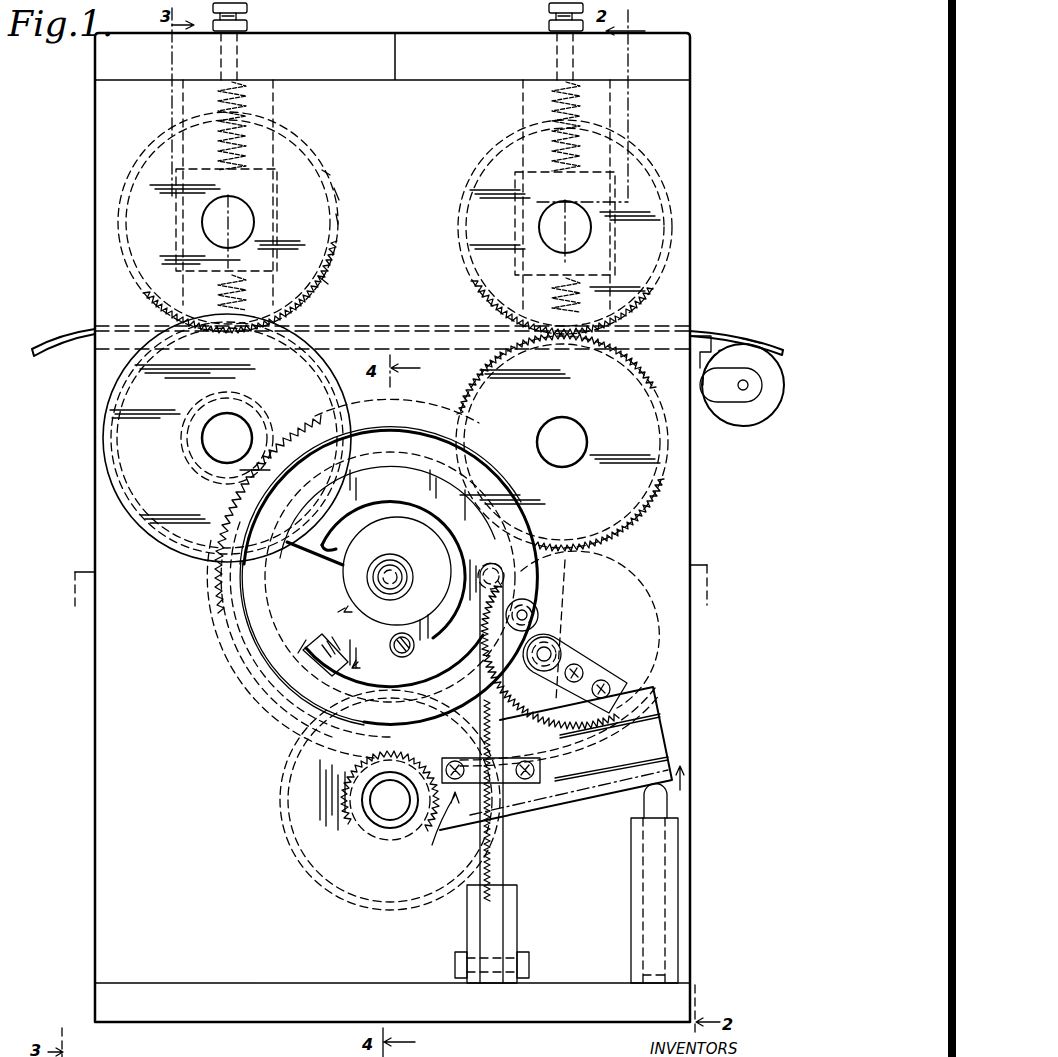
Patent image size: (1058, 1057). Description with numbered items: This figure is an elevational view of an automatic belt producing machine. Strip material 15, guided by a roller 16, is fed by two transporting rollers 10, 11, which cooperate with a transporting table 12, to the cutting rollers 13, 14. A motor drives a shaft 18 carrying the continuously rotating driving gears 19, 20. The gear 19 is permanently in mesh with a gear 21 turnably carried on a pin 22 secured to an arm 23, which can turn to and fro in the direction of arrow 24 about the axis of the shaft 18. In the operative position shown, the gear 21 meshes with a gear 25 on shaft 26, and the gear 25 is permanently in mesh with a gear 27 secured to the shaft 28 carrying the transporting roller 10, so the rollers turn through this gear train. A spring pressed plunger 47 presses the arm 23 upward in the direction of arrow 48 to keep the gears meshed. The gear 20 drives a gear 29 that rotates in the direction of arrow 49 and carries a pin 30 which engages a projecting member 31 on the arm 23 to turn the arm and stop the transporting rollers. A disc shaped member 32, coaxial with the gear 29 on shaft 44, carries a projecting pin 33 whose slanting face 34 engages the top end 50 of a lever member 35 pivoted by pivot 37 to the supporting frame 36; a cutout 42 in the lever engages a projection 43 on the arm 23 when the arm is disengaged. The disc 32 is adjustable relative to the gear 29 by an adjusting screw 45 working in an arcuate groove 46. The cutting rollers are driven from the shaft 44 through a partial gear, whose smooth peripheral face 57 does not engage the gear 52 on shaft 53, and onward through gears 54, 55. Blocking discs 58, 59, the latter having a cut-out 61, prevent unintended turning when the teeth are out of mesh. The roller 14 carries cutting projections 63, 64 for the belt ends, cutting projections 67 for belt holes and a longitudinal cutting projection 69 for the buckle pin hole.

The transporting roller 10 is at (648, 386).
The transporting roller 11 is at (642, 296).
The transporting table 12 is at (378, 326).
The cutting roller 13 is at (128, 420).
The cutting roller 14 is at (142, 283).
The strip material 15 is at (756, 336).
The roller 16 is at (748, 414).
The shaft 18 is at (390, 812).
The driving gear 19 is at (300, 846).
The driving gear 20 is at (345, 797).
The gear 21 is at (668, 652).
The pin 22 is at (590, 700).
The arm 23 is at (580, 798).
The arrow 24 is at (432, 845).
The gear 25 is at (643, 514).
The shaft 26 is at (548, 428).
The gear 27 is at (485, 258).
The shaft 28 is at (578, 236).
The gear 29 is at (252, 628).
The pin 30 is at (410, 402).
The projecting member 31 is at (563, 646).
The disc shaped member 32 is at (303, 549).
The projecting pin 33 is at (350, 668).
The slanting face 34 is at (325, 658).
The lever member 35 is at (512, 756).
The supporting frame 36 is at (262, 1005).
The pivot 37 is at (530, 967).
The cutout 42 is at (478, 840).
The projection 43 is at (462, 764).
The shaft 44 is at (378, 578).
The adjusting screw 45 is at (398, 658).
The arcuate groove 46 is at (396, 506).
The spring pressed plunger 47 is at (683, 816).
The arrow 48 is at (686, 782).
The arrow 49 is at (478, 528).
The top end 50 is at (504, 575).
The gear 52 is at (262, 414).
The shaft 53 is at (214, 452).
The gear 54 is at (163, 527).
The gear 55 is at (118, 220).
The peripheral face 57 is at (225, 603).
The disc 58 is at (260, 592).
The disc 59 is at (138, 524).
The cut-out 61 is at (247, 692).
The cutting projection 63 is at (338, 195).
The cutting projection 64 is at (339, 218).
The cutting projections 67 is at (326, 282).
The longitudinal cutting projection 69 is at (326, 168).